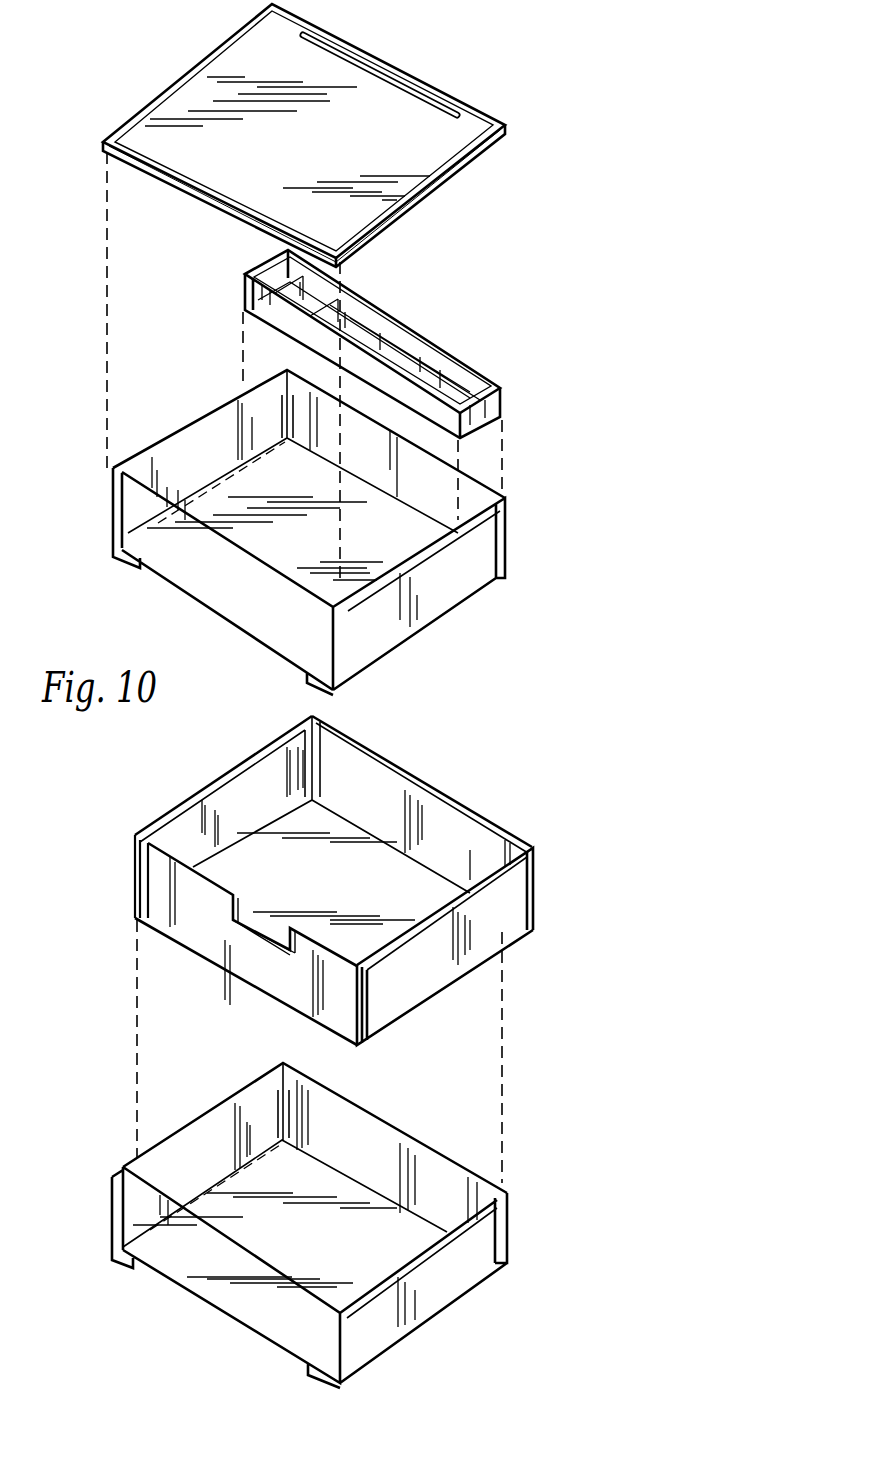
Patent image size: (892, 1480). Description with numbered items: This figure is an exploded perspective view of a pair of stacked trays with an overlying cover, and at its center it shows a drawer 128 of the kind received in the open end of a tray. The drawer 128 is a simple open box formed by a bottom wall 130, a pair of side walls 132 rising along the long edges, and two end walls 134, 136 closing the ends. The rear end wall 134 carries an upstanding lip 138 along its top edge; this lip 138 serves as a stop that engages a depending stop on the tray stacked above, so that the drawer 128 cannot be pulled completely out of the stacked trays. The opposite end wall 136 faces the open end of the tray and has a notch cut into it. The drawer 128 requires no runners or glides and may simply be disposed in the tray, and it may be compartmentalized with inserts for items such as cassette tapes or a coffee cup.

The drawer 128 is at (250, 791).
The bottom wall 130 is at (333, 886).
The side walls 132 is at (180, 805).
The rear end wall 134 is at (398, 797).
The end wall 136 is at (190, 917).
The upstanding lip 138 is at (357, 737).